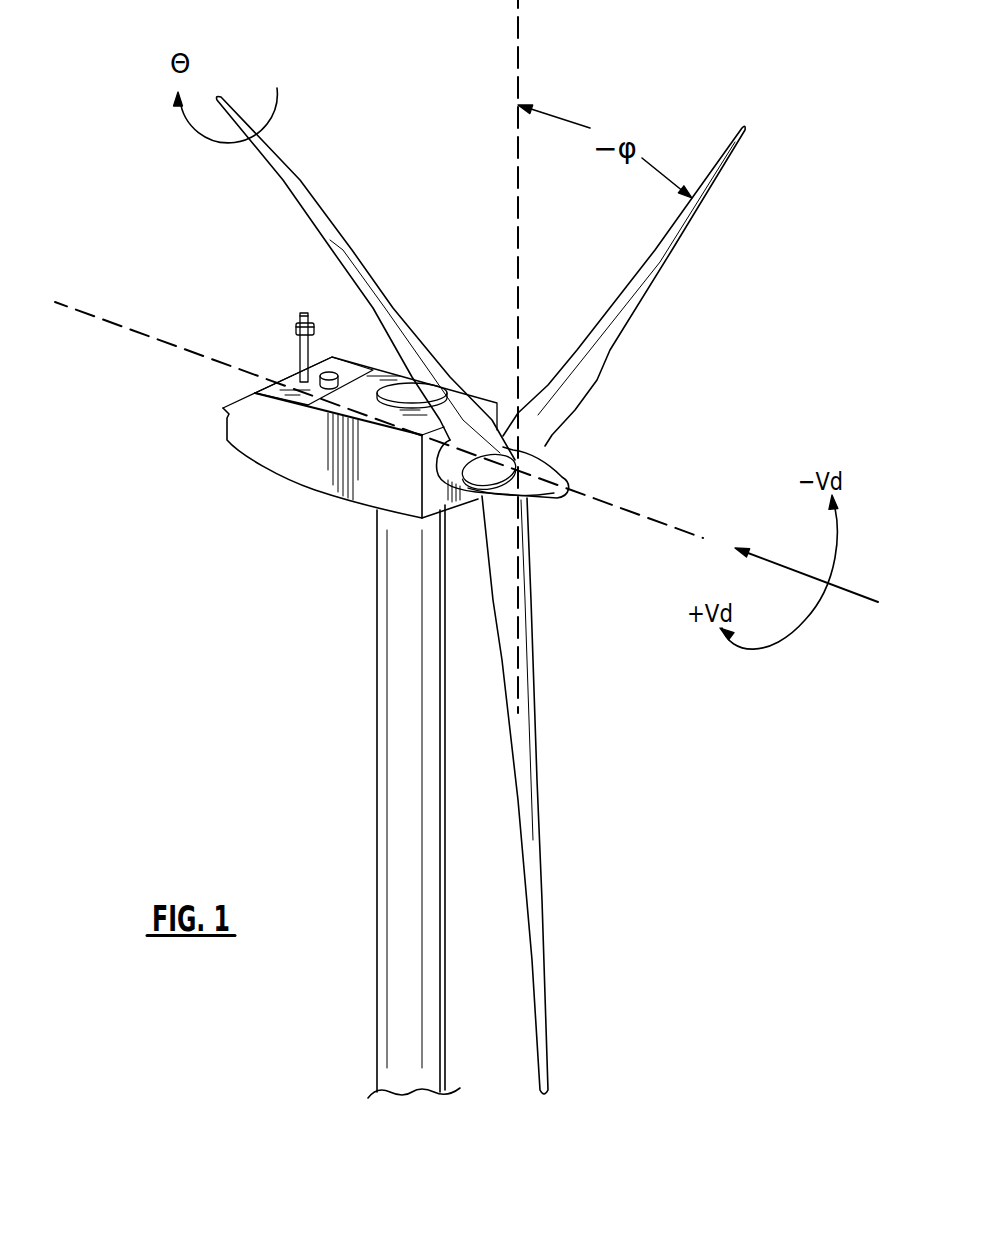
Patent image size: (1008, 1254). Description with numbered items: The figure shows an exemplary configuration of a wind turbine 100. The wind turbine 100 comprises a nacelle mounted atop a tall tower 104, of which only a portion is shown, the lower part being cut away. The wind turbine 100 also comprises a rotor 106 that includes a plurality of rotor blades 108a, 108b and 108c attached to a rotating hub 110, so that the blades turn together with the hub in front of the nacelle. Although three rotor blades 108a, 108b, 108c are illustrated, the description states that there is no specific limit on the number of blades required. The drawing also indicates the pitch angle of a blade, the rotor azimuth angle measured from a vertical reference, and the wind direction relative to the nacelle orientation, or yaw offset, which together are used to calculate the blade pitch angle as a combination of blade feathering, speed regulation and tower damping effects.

The wind turbine 100 is at (455, 597).
The tower 104 is at (377, 737).
The rotor 106 is at (700, 340).
The rotor blade 108a is at (540, 830).
The rotor blade 108b is at (713, 180).
The rotor blade 108c is at (283, 166).
The rotating hub 110 is at (553, 503).